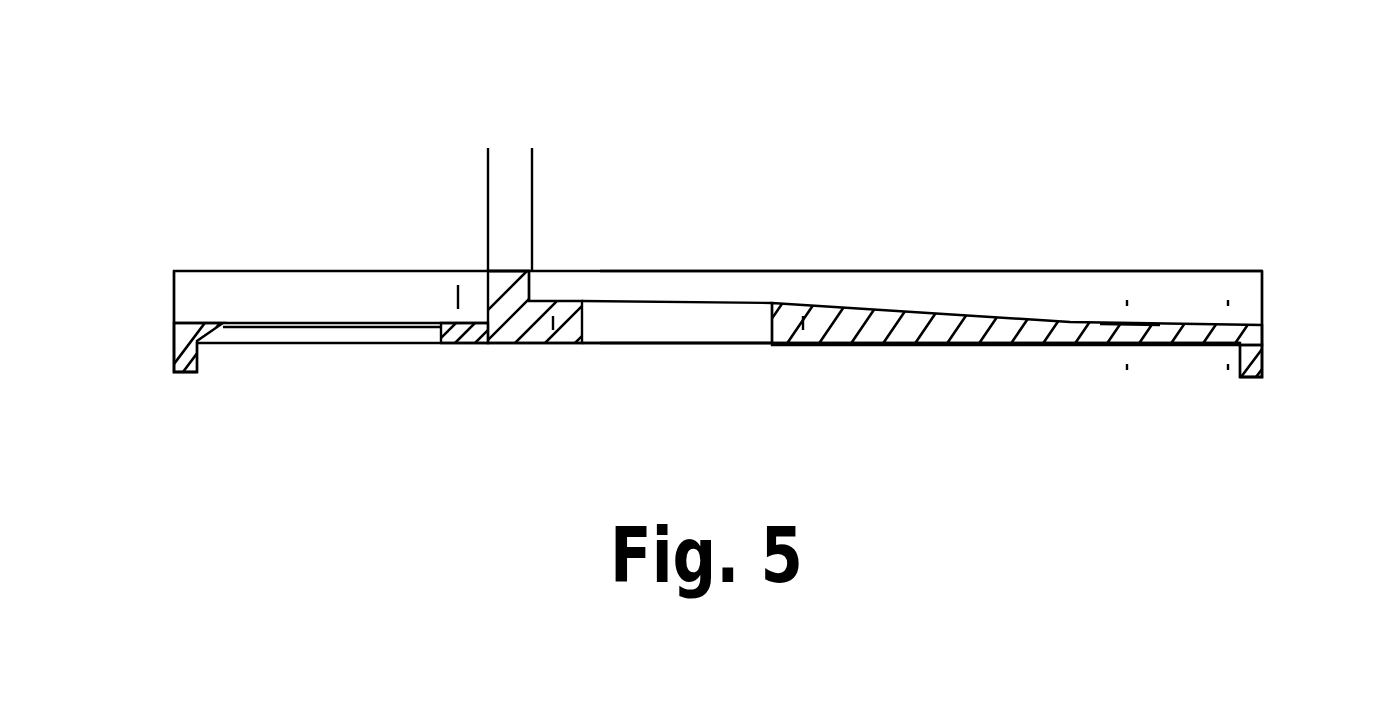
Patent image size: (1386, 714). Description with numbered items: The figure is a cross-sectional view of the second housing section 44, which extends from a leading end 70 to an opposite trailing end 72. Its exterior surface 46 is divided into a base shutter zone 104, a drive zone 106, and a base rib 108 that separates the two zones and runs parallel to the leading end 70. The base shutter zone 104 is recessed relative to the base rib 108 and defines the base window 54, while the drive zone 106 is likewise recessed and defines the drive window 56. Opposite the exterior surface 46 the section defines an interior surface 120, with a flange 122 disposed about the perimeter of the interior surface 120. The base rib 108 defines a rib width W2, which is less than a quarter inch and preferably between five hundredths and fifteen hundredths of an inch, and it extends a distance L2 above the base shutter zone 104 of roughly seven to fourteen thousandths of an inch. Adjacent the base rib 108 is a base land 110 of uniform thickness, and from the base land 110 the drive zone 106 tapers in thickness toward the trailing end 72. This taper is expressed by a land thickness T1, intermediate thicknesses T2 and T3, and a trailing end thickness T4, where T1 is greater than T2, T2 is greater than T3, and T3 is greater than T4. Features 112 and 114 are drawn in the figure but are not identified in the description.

The second housing section 44 is at (278, 66).
The exterior surface 46 is at (1209, 271).
The base window 54 is at (441, 332).
The drive window 56 is at (770, 322).
The leading end 70 is at (174, 332).
The trailing end 72 is at (1262, 345).
The base shutter zone 104 is at (288, 323).
The drive zone 106 is at (953, 312).
The base rib 108 is at (510, 308).
The base land 110 is at (527, 290).
The step 112 is at (805, 303).
The thin end section 114 is at (1124, 300).
The interior surface 120 is at (994, 345).
The flange 122 is at (178, 375).
The rib width W2 is at (560, 160).
The distance L2 is at (458, 310).
The land thickness T1 is at (553, 314).
The intermediate thickness T2 is at (803, 316).
The intermediate thickness T3 is at (1127, 300).
The trailing end thickness T4 is at (1228, 300).